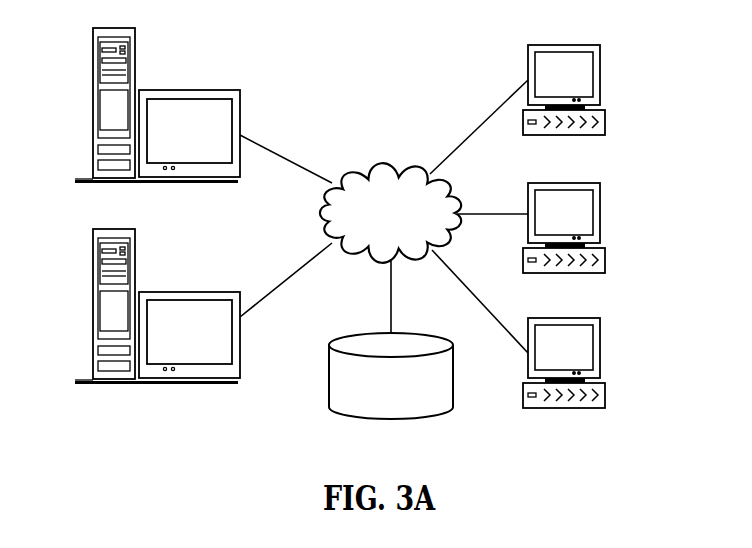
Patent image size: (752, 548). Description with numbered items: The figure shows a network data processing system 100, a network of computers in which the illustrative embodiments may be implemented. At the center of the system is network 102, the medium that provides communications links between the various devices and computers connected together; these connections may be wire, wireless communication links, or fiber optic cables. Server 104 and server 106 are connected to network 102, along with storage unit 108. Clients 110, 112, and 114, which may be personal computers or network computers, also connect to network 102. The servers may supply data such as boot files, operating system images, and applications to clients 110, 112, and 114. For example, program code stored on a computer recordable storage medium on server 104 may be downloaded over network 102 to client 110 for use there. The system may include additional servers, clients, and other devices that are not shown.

The network data processing system 100 is at (440, 69).
The network 102 is at (364, 166).
The server 104 is at (93, 103).
The server 106 is at (93, 305).
The storage unit 108 is at (328, 388).
The client 110 is at (602, 73).
The client 112 is at (602, 213).
The client 114 is at (600, 348).